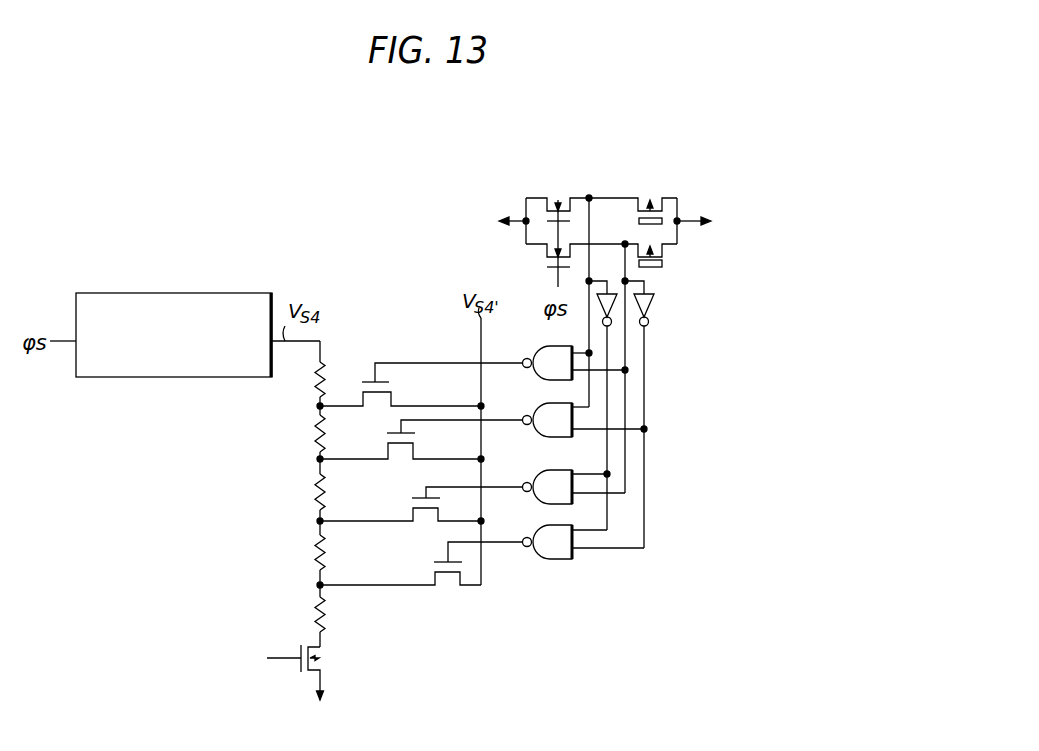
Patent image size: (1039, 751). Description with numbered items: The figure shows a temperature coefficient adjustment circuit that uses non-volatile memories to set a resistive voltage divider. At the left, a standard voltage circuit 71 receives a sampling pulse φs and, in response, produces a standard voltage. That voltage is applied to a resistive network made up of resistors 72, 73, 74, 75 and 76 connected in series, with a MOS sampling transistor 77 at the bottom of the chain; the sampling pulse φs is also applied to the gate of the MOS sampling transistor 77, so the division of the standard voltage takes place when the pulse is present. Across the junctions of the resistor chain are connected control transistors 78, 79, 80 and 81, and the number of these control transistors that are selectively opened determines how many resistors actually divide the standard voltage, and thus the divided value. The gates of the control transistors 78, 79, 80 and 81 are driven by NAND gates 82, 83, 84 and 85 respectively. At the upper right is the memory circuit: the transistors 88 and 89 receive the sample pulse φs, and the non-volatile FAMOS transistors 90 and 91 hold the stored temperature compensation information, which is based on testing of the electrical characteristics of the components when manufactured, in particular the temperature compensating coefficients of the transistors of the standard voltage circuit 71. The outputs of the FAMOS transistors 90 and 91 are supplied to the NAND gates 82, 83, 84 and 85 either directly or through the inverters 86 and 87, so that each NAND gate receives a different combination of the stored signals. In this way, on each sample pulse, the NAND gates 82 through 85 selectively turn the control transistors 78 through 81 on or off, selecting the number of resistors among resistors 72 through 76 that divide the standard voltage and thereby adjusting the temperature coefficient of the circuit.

The standard voltage circuit 71 is at (248, 306).
The resistor 72 is at (312, 385).
The resistor 73 is at (312, 436).
The resistor 74 is at (312, 486).
The resistor 75 is at (317, 541).
The resistor 76 is at (317, 608).
The MOS sampling transistor 77 is at (324, 660).
The control transistor 78 is at (378, 400).
The control transistor 79 is at (400, 451).
The control transistor 80 is at (422, 514).
The control transistor 81 is at (450, 578).
The NAND gate 82 is at (538, 382).
The NAND gate 83 is at (540, 437).
The NAND gate 84 is at (540, 504).
The NAND gate 85 is at (552, 558).
The inverter 86 is at (598, 306).
The inverter 87 is at (654, 304).
The transistor of the memory circuit 88 is at (552, 205).
The transistor of the memory circuit 89 is at (548, 248).
The FAMOS transistor 90 is at (657, 200).
The FAMOS transistor 91 is at (668, 250).